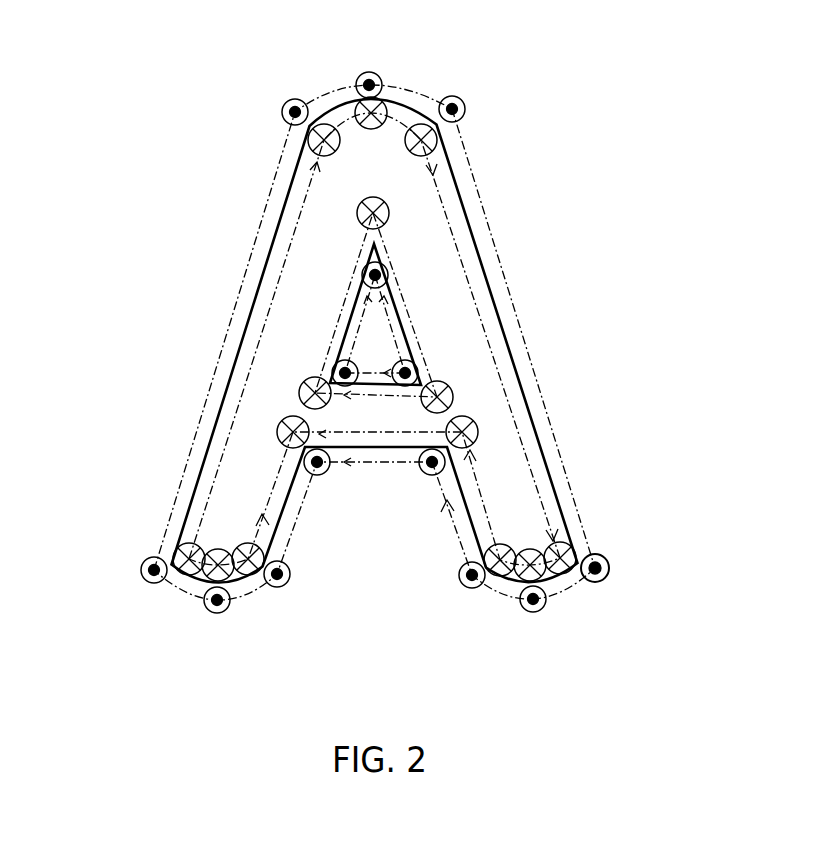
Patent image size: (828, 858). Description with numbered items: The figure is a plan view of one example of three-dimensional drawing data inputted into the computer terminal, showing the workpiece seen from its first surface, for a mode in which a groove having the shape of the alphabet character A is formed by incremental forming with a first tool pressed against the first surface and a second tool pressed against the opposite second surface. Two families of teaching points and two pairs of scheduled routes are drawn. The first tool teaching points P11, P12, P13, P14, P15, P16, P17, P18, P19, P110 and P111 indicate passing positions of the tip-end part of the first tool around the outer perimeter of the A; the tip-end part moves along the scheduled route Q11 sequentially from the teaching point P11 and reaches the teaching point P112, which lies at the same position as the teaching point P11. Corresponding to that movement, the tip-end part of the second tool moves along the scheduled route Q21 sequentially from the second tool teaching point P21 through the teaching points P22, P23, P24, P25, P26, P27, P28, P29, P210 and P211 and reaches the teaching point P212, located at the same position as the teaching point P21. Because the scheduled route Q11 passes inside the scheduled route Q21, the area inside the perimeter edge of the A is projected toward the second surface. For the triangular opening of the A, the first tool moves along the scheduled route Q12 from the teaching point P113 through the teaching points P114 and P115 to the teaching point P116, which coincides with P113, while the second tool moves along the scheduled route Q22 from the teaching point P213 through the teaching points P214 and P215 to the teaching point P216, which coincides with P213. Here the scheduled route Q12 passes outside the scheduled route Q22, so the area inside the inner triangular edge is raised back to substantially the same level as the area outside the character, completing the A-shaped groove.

The first tool teaching point P11 is at (511, 137).
The first tool teaching point P12 is at (570, 540).
The first tool teaching point P13 is at (541, 582).
The first tool teaching point P14 is at (498, 577).
The first tool teaching point P15 is at (458, 450).
The first tool teaching point P16 is at (296, 450).
The first tool teaching point P17 is at (249, 577).
The first tool teaching point P18 is at (208, 582).
The first tool teaching point P19 is at (173, 548).
The first tool teaching point P110 is at (307, 138).
The first tool teaching point P111 is at (358, 100).
The first tool teaching point P112 is at (421, 140).
The first tool teaching point P113 is at (504, 198).
The first tool teaching point P114 is at (455, 400).
The first tool teaching point P115 is at (299, 392).
The first tool teaching point P116 is at (390, 212).
The second tool teaching point P21 is at (528, 83).
The second tool teaching point P22 is at (609, 563).
The second tool teaching point P23 is at (536, 612).
The second tool teaching point P24 is at (466, 584).
The second tool teaching point P25 is at (428, 478).
The second tool teaching point P26 is at (320, 477).
The second tool teaching point P27 is at (287, 587).
The second tool teaching point P28 is at (215, 614).
The second tool teaching point P29 is at (142, 573).
The second tool teaching point P210 is at (287, 105).
The second tool teaching point P211 is at (370, 72).
The second tool teaching point P212 is at (459, 97).
The second tool teaching point P213 is at (509, 255).
The second tool teaching point P214 is at (420, 372).
The second tool teaching point P215 is at (334, 362).
The second tool teaching point P216 is at (390, 275).
The scheduled route Q11 is at (485, 300).
The scheduled route Q12 is at (350, 275).
The scheduled route Q21 is at (522, 327).
The scheduled route Q22 is at (345, 333).